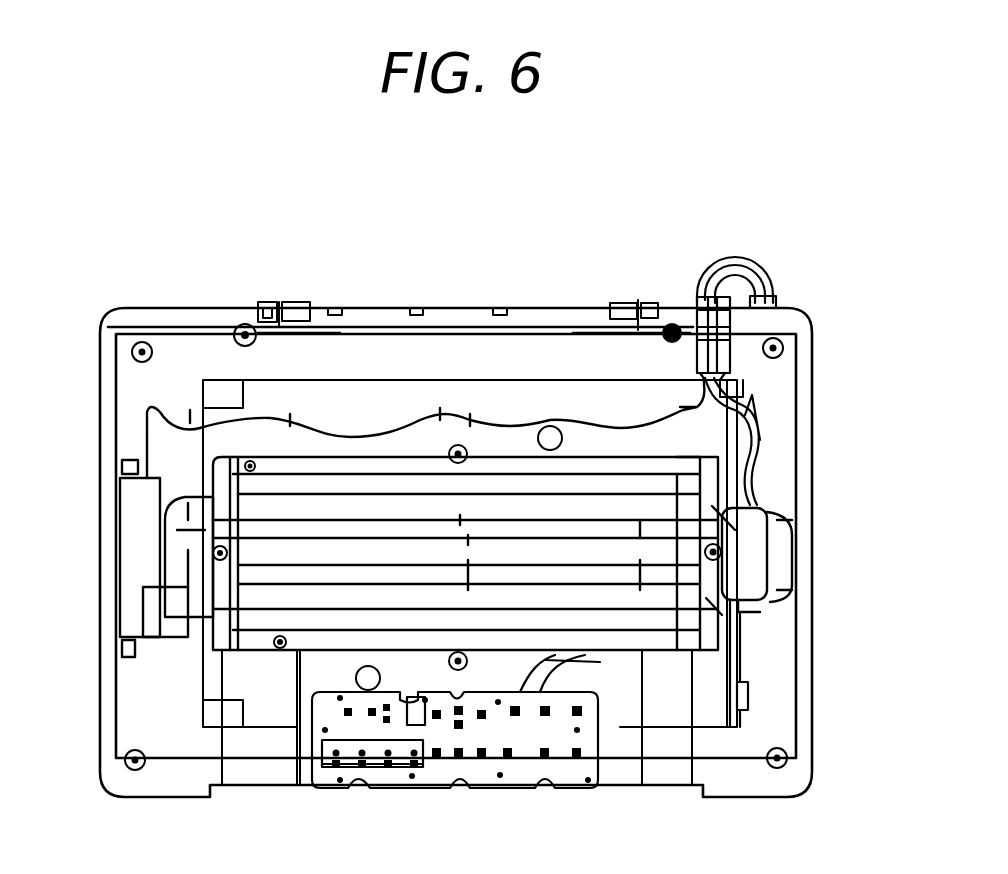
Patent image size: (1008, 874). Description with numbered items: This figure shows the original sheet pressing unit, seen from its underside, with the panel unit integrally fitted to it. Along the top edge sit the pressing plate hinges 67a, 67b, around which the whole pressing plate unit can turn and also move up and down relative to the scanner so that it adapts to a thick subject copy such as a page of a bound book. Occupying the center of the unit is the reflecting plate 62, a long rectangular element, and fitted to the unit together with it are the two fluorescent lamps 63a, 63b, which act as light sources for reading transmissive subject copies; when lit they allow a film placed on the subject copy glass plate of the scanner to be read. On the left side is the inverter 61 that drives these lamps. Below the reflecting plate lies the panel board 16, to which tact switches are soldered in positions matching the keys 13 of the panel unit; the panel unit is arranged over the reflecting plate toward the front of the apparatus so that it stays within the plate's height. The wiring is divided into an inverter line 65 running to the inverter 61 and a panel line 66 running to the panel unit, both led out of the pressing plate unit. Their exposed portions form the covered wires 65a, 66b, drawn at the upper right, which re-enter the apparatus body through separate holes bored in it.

The keys 13 is at (487, 790).
The panel board 16 is at (314, 790).
The inverter 61 is at (133, 570).
The reflecting plate 62 is at (388, 482).
The fluorescent lamp 63a is at (705, 512).
The fluorescent lamp 63b is at (705, 598).
The inverter line 65 is at (265, 430).
The covered wire 65a is at (700, 270).
The panel line 66 is at (757, 460).
The covered wire 66b is at (767, 258).
The pressing plate hinge 67a is at (270, 302).
The pressing plate hinge 67b is at (620, 302).